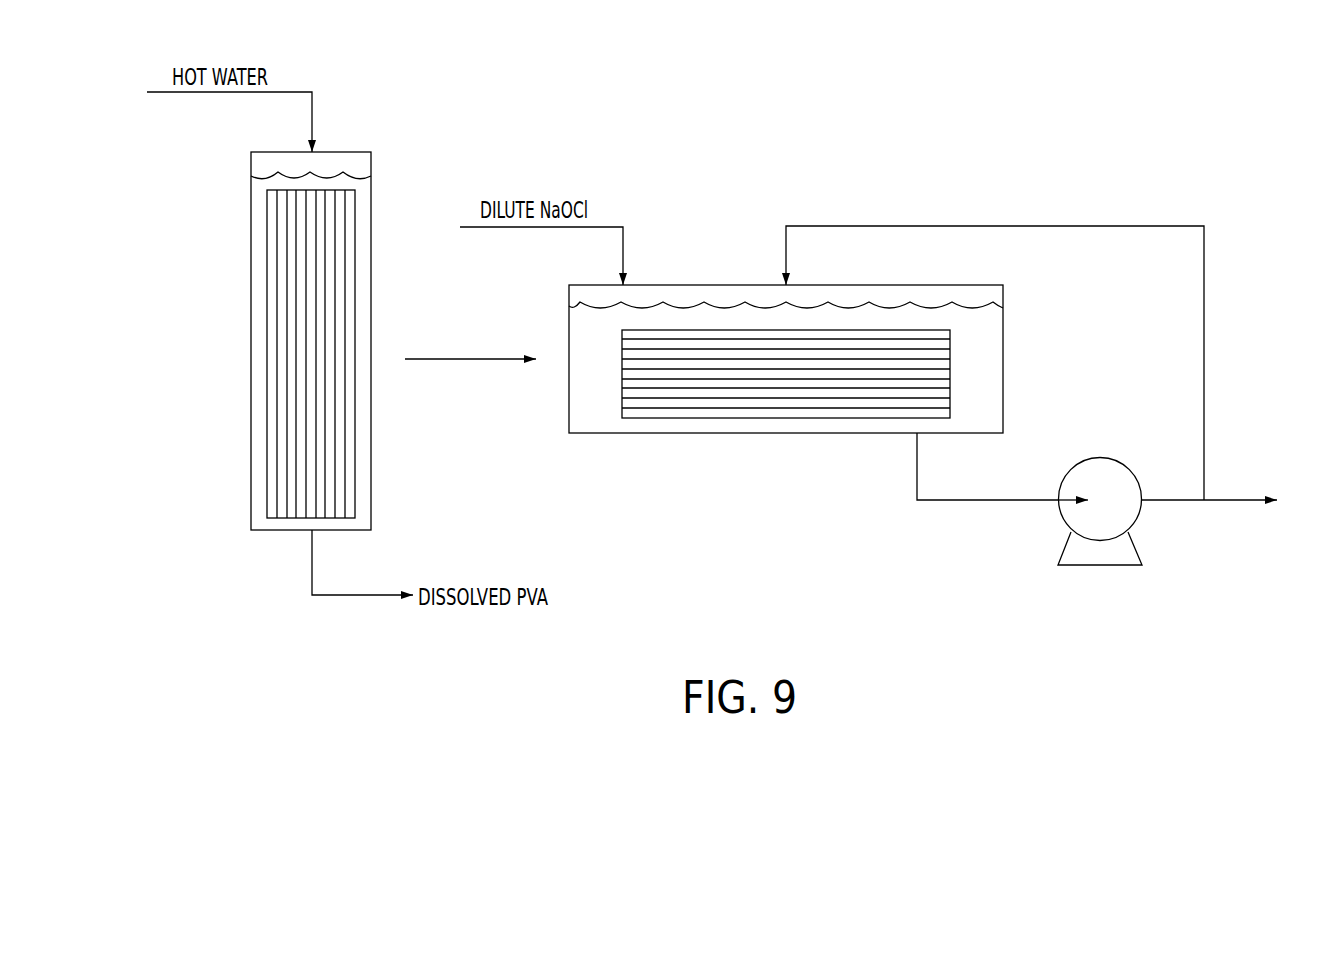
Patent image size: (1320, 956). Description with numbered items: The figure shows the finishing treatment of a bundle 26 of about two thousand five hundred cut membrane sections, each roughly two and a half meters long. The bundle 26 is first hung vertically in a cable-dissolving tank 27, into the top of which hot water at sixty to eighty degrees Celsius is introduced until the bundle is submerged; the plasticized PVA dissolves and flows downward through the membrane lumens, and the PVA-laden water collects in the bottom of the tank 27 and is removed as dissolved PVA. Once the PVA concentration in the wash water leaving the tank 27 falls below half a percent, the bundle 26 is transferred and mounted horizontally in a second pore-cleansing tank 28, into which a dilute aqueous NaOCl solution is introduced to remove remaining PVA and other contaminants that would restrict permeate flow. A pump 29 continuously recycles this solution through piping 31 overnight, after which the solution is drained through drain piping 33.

The bundle 26 is at (267, 338).
The cable-dissolving tank 27 is at (251, 231).
The second pore-cleansing tank 28 is at (818, 434).
The pump 29 is at (1101, 457).
The piping 31 is at (1152, 226).
The drain piping 33 is at (1240, 501).